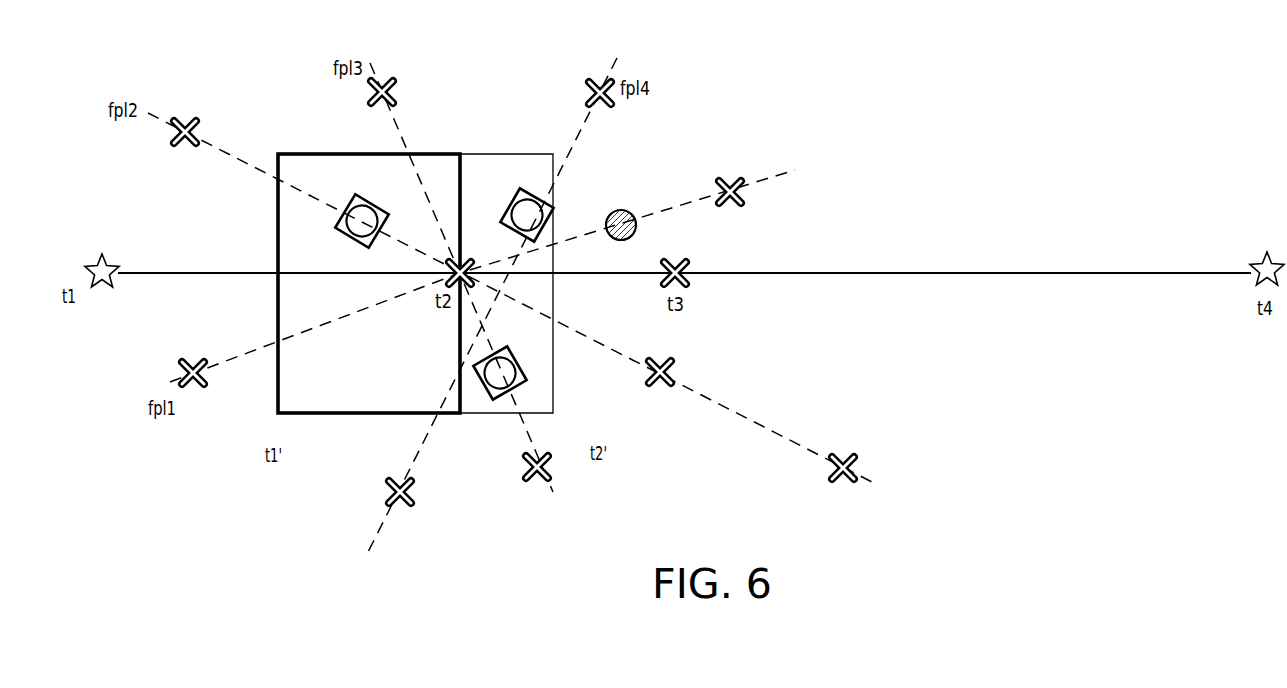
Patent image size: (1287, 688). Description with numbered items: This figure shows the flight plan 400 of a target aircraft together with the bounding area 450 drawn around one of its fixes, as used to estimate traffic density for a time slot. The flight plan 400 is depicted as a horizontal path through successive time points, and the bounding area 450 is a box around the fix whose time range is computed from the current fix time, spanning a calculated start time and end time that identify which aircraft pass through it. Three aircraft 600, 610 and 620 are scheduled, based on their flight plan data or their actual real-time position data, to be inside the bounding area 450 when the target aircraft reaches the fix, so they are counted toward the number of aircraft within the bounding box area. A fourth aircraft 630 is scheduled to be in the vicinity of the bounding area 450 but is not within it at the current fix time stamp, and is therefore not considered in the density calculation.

The flight plan 400 is at (1025, 273).
The bounding area 450 is at (435, 152).
The aircraft 600 is at (360, 192).
The aircraft 610 is at (527, 190).
The aircraft 620 is at (523, 383).
The fourth aircraft 630 is at (622, 210).